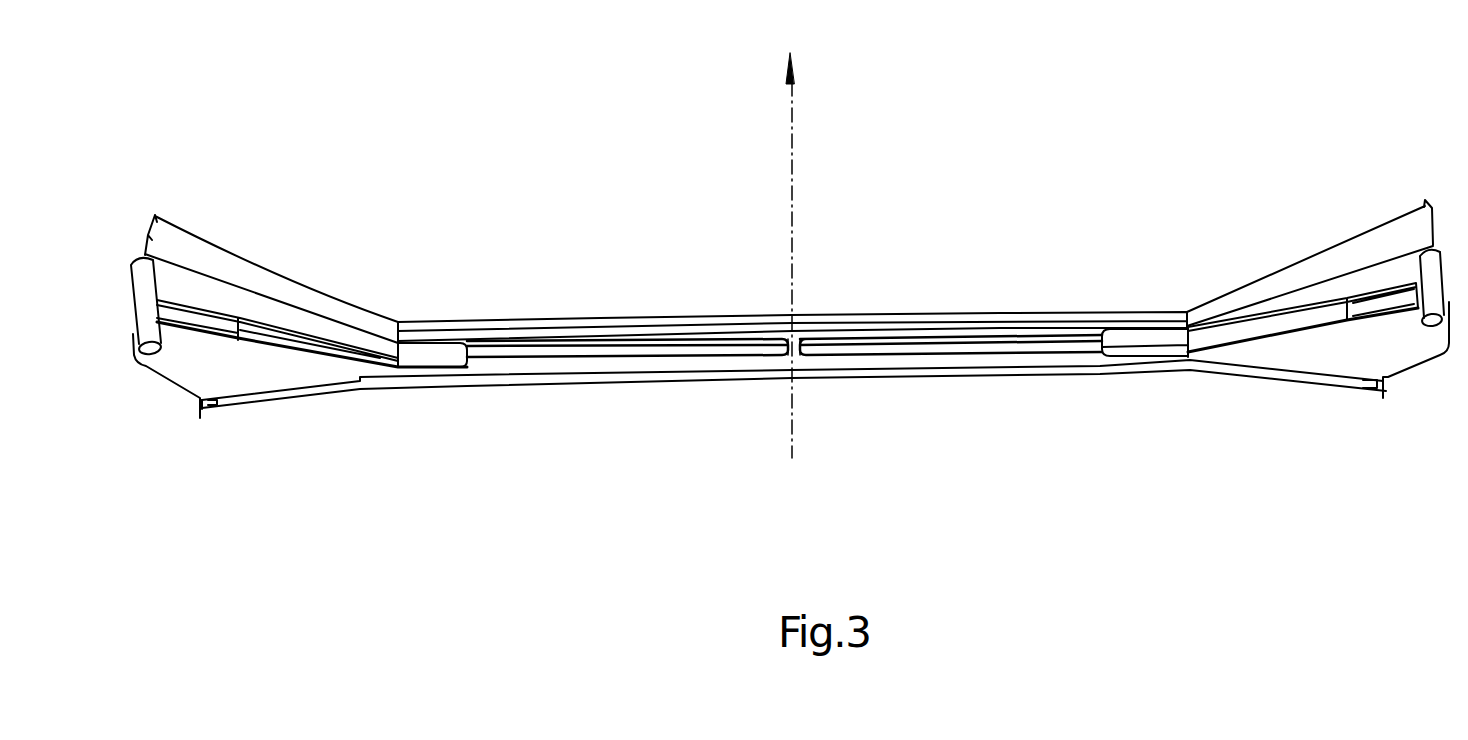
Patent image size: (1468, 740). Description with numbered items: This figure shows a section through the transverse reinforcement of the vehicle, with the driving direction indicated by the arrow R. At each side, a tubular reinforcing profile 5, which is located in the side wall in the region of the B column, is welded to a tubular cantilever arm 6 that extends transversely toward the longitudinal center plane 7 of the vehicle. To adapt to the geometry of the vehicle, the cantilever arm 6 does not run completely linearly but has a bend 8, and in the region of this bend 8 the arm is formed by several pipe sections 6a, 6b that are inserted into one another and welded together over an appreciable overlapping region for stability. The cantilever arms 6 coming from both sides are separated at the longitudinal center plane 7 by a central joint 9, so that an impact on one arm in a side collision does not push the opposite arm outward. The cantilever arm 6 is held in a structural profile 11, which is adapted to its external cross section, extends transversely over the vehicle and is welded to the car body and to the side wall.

The reinforcing profile 5 is at (1430, 275).
The cantilever arm 6 is at (1090, 318).
The pipe section 6a is at (1008, 342).
The pipe section 6b is at (1378, 300).
The longitudinal center plane 7 is at (795, 214).
The bend 8 is at (1177, 327).
The central joint 9 is at (800, 325).
The structural profile 11 is at (1177, 358).